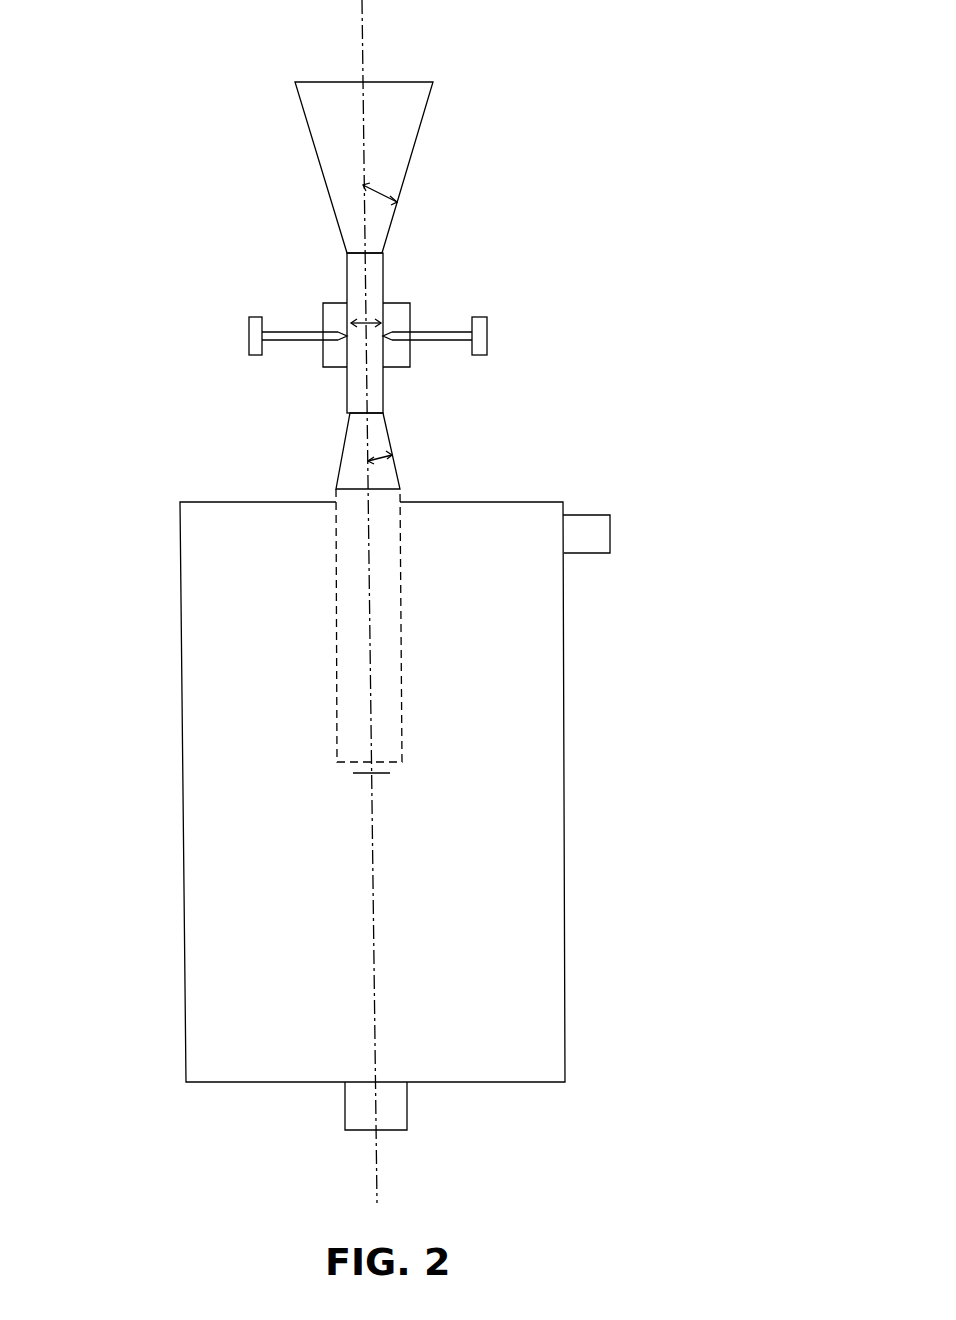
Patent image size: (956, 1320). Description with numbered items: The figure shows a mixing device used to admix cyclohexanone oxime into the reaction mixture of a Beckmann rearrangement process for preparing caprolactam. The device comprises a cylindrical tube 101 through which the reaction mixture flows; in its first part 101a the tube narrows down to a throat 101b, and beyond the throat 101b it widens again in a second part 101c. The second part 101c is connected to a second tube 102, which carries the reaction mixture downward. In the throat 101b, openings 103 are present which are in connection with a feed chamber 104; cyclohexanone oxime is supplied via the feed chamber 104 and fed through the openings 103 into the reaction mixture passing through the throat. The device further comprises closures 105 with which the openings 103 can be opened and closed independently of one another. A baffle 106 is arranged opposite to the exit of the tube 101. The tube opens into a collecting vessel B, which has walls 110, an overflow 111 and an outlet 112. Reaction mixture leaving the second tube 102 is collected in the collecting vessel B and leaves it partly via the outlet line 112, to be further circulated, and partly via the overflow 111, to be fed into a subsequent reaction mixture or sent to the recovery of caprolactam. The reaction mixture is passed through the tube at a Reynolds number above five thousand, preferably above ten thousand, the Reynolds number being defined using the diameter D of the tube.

The cylindrical tube 101 is at (374, 271).
The first part 101a is at (305, 118).
The throat 101b is at (347, 267).
The second part 101c is at (343, 441).
The second tube 102 is at (337, 628).
The openings 103 is at (347, 338).
The feed chamber 104 is at (410, 318).
The closures 105 is at (487, 341).
The baffle 106 is at (380, 775).
The walls 110 is at (565, 785).
The overflow 111 is at (590, 515).
The outlet 112 is at (407, 1097).
The collecting vessel B is at (378, 792).
The diameter D is at (366, 301).